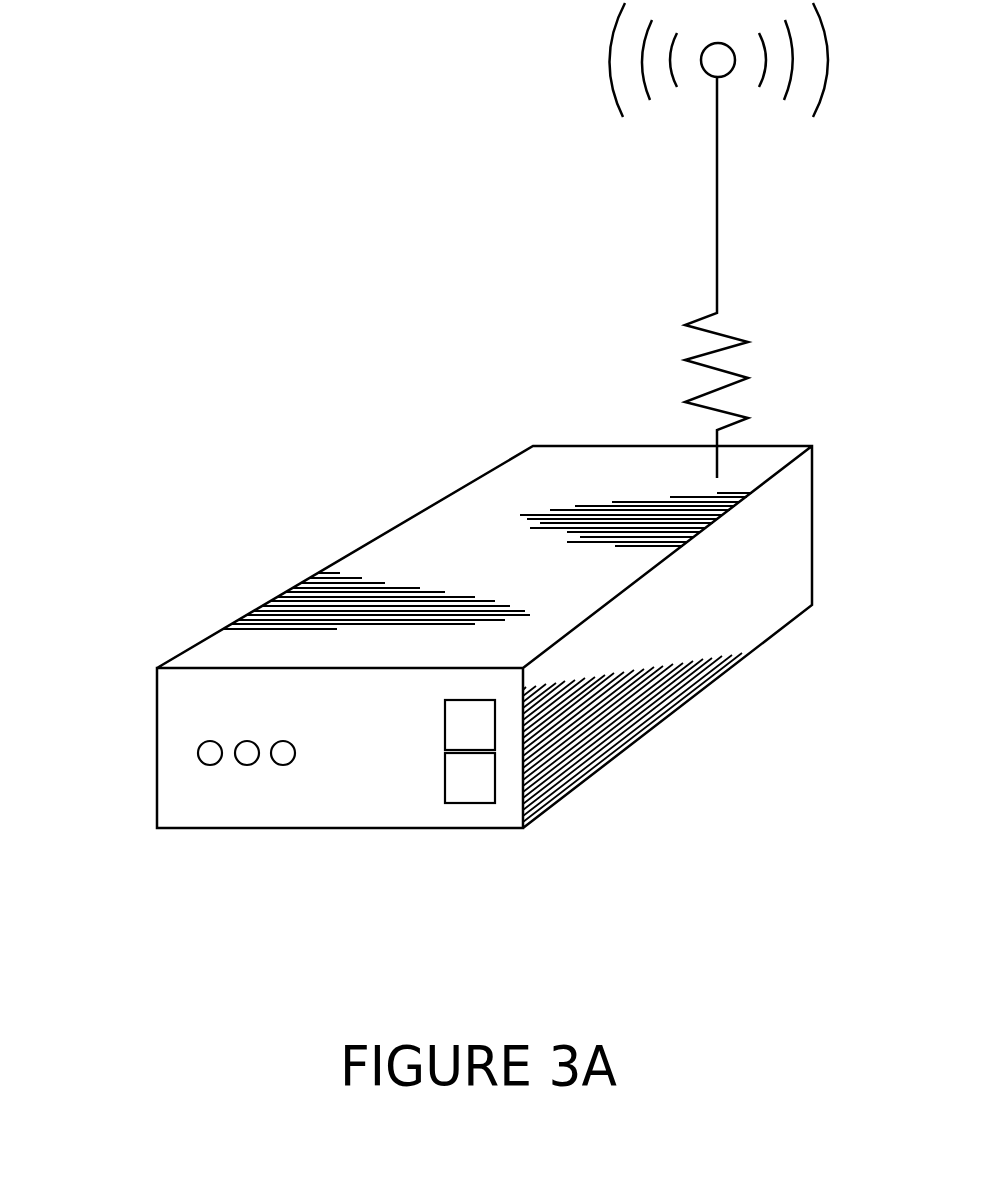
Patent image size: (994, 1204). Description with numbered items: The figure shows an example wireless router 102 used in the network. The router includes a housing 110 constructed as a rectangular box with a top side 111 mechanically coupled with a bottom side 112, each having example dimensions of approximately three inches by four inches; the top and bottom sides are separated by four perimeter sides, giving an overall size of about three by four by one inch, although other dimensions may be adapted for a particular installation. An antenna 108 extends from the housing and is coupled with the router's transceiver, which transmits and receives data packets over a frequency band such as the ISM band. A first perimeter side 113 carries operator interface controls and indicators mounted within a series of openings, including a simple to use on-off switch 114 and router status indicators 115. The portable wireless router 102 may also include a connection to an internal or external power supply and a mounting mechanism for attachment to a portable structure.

The wireless router 102 is at (462, 330).
The antenna 108 is at (700, 212).
The housing 110 is at (831, 519).
The top side 111 is at (434, 550).
The bottom side 112 is at (592, 793).
The first perimeter side 113 is at (197, 719).
The on-off switch 114 is at (430, 734).
The router status indicators 115 is at (225, 786).